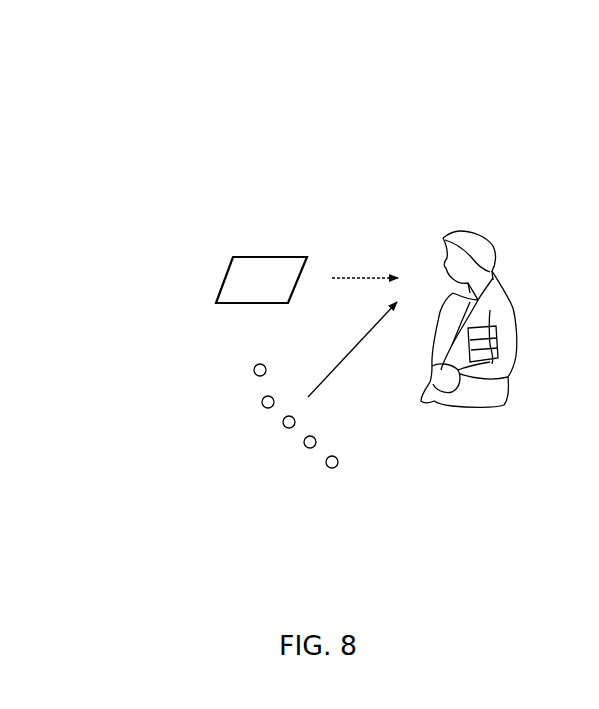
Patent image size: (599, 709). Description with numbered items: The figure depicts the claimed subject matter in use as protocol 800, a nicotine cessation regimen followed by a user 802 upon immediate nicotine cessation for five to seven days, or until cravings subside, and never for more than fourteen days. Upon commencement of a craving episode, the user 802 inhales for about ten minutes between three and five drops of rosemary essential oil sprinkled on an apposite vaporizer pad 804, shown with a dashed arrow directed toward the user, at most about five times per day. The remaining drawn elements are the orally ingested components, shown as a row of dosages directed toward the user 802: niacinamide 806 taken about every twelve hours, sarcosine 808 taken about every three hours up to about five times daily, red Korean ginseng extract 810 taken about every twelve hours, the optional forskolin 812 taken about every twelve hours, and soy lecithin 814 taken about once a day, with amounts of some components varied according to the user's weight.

The protocol 800 is at (120, 102).
The user 802 is at (428, 233).
The vaporizer pad 804 is at (270, 257).
The niacinamide 806 is at (253, 370).
The sarcosine 808 is at (261, 402).
The red Korean ginseng extract 810 is at (282, 423).
The forskolin 812 is at (303, 445).
The soy lecithin 814 is at (325, 465).